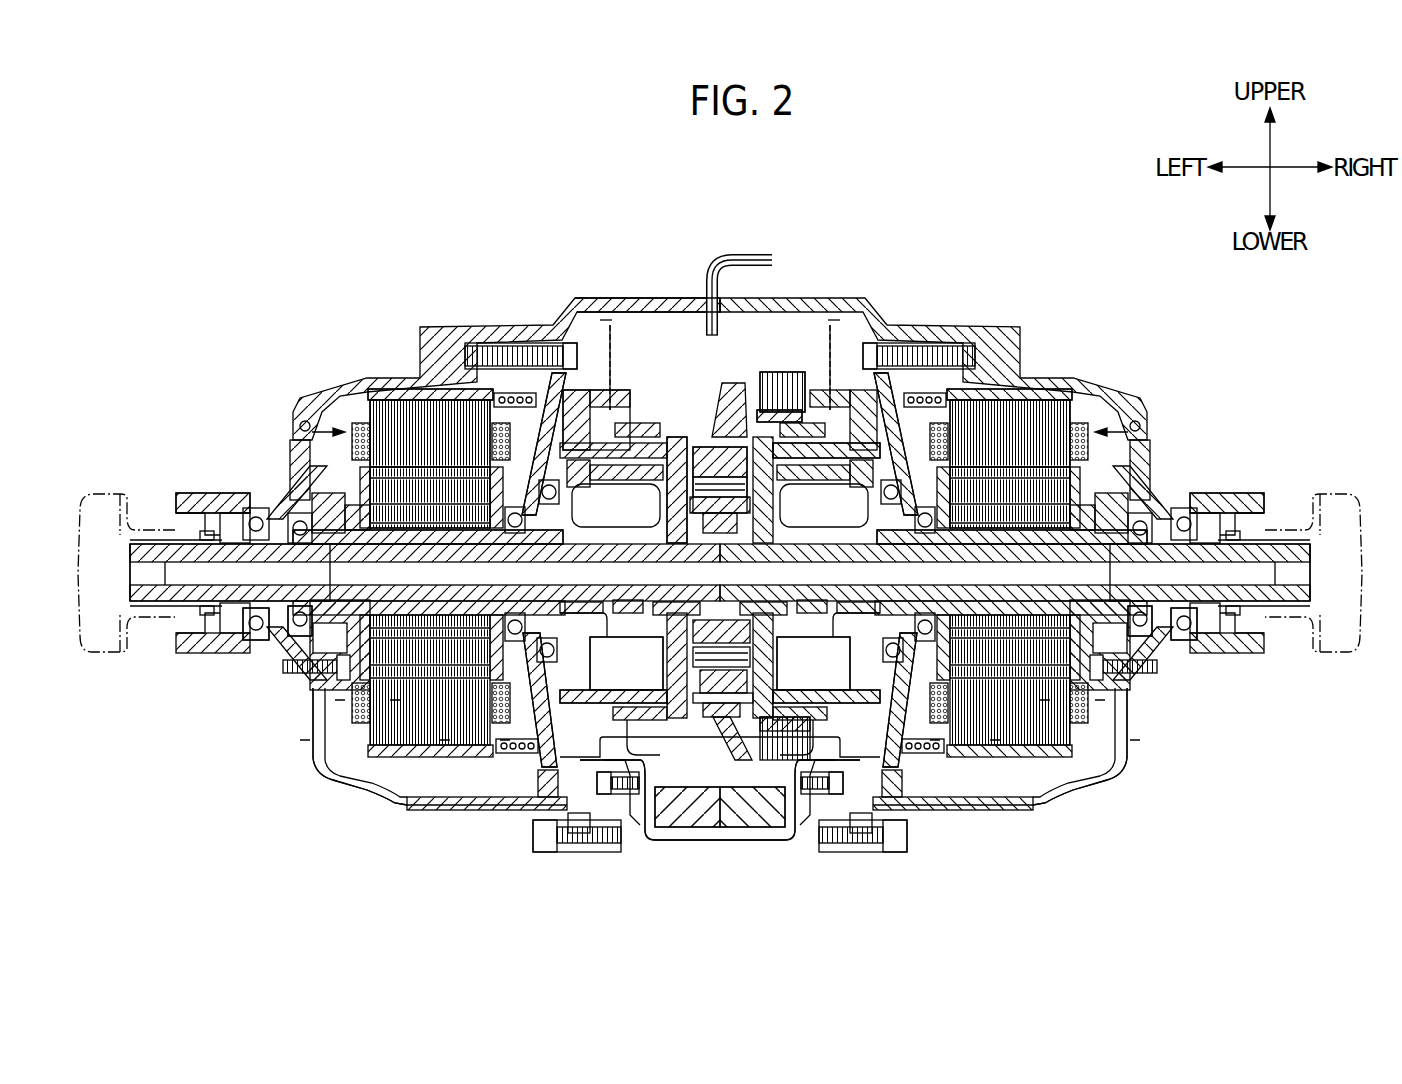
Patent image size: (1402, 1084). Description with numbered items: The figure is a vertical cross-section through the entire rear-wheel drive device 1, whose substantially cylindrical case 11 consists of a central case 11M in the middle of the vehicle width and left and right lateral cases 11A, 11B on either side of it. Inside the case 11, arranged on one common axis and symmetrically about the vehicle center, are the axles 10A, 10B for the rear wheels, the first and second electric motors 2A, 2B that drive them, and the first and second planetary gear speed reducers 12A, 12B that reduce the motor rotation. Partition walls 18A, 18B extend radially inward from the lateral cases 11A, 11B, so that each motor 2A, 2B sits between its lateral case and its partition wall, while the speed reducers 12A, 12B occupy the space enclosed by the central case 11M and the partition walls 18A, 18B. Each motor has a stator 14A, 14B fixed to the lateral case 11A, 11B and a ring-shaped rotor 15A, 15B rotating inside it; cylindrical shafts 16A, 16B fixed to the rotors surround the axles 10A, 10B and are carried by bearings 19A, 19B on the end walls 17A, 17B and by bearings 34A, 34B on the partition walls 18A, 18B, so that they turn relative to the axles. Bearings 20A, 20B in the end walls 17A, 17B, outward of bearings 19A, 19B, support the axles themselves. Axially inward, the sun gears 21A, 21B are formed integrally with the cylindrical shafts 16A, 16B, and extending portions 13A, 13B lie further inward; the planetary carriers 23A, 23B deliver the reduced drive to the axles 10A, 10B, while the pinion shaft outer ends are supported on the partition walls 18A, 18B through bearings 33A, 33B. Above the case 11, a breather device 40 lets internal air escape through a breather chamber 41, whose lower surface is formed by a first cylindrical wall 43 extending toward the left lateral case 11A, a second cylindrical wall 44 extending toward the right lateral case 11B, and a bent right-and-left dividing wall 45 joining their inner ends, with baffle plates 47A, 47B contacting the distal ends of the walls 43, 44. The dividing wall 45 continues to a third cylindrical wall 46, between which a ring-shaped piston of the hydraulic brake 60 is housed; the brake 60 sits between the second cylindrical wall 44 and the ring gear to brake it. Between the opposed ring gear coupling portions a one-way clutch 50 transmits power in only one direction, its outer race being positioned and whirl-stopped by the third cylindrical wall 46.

The rear-wheel drive device 1 is at (1062, 200).
The first electric motor 2A is at (411, 398).
The second electric motor 2B is at (1030, 398).
The axle 10A is at (158, 600).
The axle 10B is at (1283, 600).
The case 11 is at (722, 840).
The lateral case 11A is at (408, 810).
The lateral case 11B is at (1030, 810).
The central case 11M is at (673, 838).
The first planetary gear speed reducer 12A is at (600, 340).
The second planetary gear speed reducer 12B is at (858, 373).
The extending portion 13A is at (626, 663).
The extending portion 13B is at (813, 663).
The stator 14A is at (385, 413).
The stator 14B is at (1057, 413).
The rotor 15A is at (375, 492).
The rotor 15B is at (1065, 492).
The cylindrical shaft 16A is at (352, 538).
The cylindrical shaft 16B is at (1088, 538).
The end wall 17A is at (228, 502).
The end wall 17B is at (1212, 502).
The partition wall 18A is at (584, 373).
The partition wall 18B is at (895, 392).
The bearing 19A is at (298, 630).
The bearing 19B is at (1142, 630).
The bearing 20A is at (258, 630).
The bearing 20B is at (1182, 630).
The sun gear 21A is at (590, 615).
The sun gear 21B is at (850, 615).
The planetary carrier 23A is at (600, 705).
The planetary carrier 23B is at (845, 705).
The bearing 33A is at (545, 648).
The bearing 33B is at (895, 648).
The bearing 34A is at (488, 745).
The bearing 34B is at (955, 745).
The breather device 40 is at (709, 247).
The breather chamber 41 is at (675, 335).
The first cylindrical wall 43 is at (632, 400).
The second cylindrical wall 44 is at (832, 375).
The right-and-left dividing wall 45 is at (734, 453).
The third cylindrical wall 46 is at (722, 430).
The baffle plate 47A is at (522, 388).
The baffle plate 47B is at (905, 345).
The one-way clutch 50 is at (789, 370).
The hydraulic brake 60 is at (805, 405).